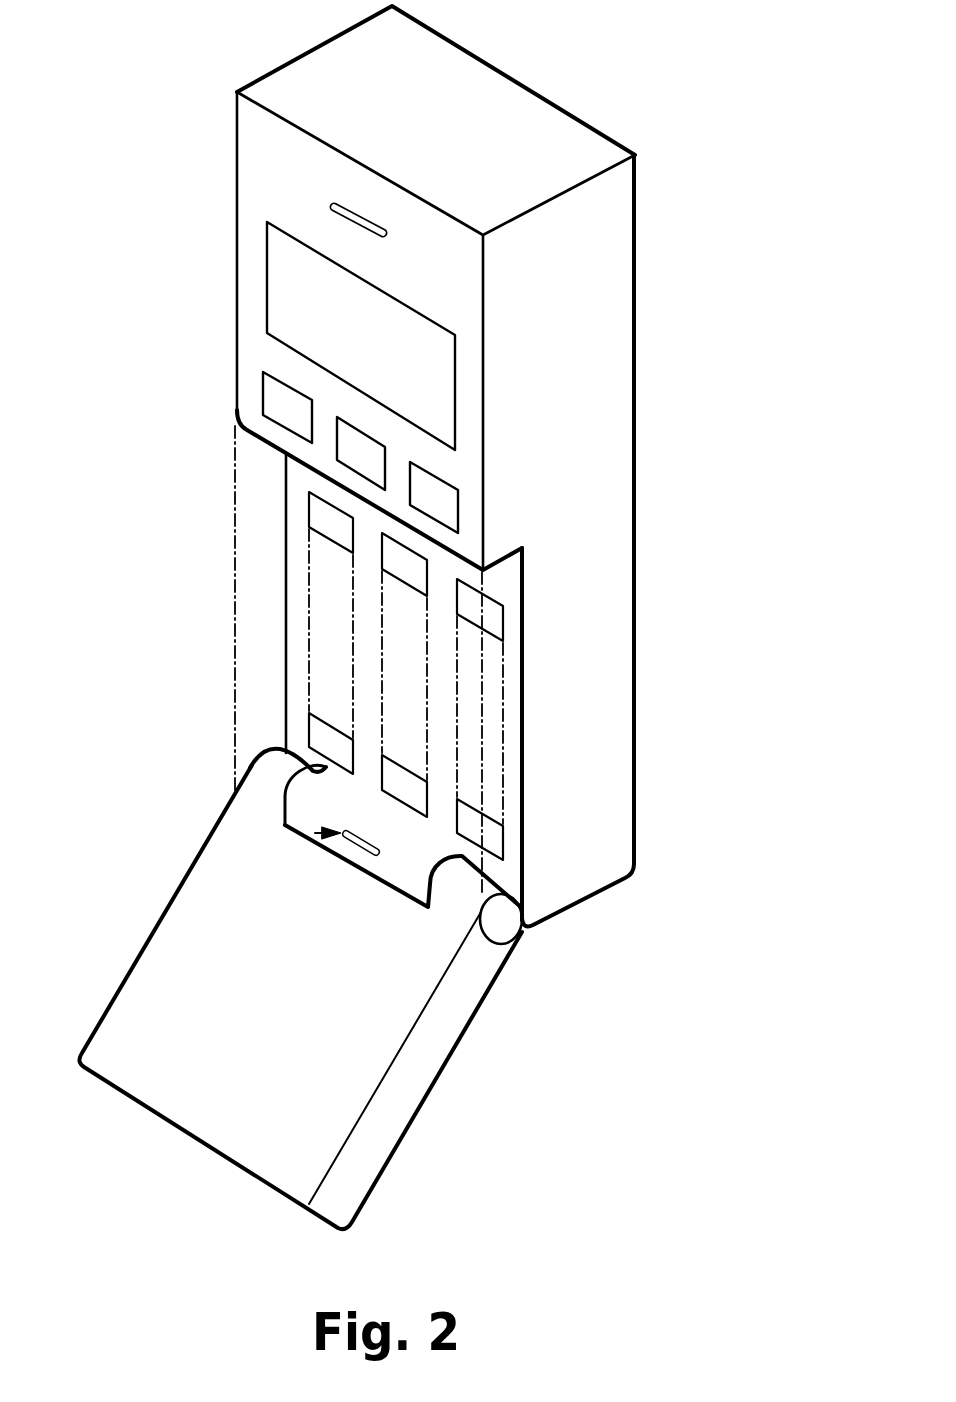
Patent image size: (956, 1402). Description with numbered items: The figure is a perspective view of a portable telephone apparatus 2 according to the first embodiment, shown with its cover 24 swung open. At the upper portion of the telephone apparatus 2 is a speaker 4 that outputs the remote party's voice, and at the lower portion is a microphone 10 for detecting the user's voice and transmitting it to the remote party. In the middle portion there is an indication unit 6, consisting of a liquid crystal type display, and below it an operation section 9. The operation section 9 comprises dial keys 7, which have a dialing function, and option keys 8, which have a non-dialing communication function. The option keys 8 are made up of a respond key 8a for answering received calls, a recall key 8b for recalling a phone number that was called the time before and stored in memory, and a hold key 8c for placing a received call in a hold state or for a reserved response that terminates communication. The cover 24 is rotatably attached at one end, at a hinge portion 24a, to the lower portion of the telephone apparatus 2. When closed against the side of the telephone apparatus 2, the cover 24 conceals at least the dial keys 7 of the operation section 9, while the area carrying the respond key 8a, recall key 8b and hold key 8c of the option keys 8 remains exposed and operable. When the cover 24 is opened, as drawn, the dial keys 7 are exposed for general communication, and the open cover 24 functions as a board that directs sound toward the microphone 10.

The telephone apparatus 2 is at (462, 67).
The speaker 4 is at (331, 207).
The indication unit 6 is at (266, 276).
The dial keys 7 is at (494, 631).
The option keys 8 is at (114, 394).
The respond key 8a is at (266, 394).
The recall key 8b is at (345, 452).
The hold key 8c is at (443, 502).
The operation section 9 is at (275, 550).
The microphone 10 is at (297, 829).
The cover 24 is at (132, 1073).
The hinge portion of flip cover 24a is at (262, 770).